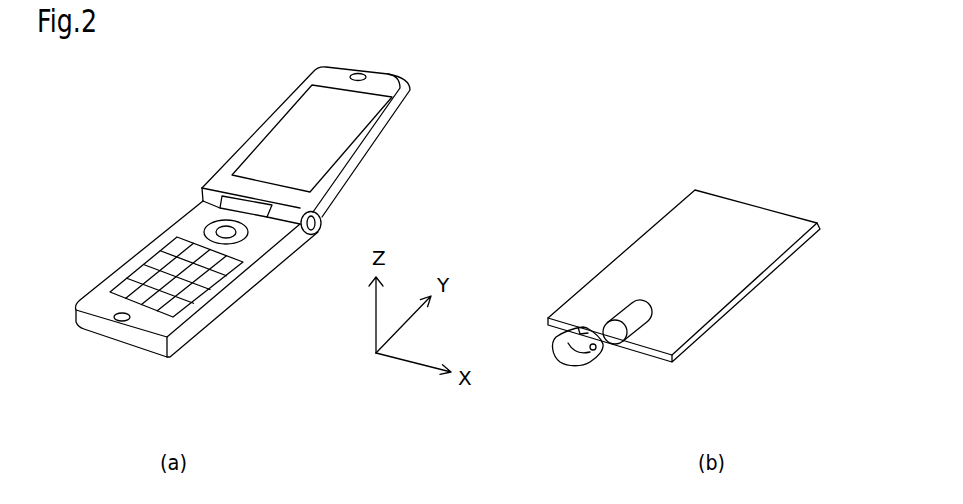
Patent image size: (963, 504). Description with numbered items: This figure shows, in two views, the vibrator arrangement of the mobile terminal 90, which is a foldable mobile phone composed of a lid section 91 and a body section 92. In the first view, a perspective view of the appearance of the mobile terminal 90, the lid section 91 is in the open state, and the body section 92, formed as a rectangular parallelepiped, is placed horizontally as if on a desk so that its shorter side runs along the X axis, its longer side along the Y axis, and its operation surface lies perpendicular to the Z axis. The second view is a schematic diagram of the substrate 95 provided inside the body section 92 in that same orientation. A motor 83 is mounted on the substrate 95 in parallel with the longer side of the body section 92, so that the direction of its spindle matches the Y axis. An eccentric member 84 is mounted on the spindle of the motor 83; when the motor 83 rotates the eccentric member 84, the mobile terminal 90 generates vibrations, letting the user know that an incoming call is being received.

The mobile terminal 90 is at (232, 114).
The lid section 91 is at (381, 133).
The body section 92 is at (238, 293).
The substrate 95 is at (818, 226).
The motor 83 is at (630, 350).
The eccentric member 84 is at (568, 362).